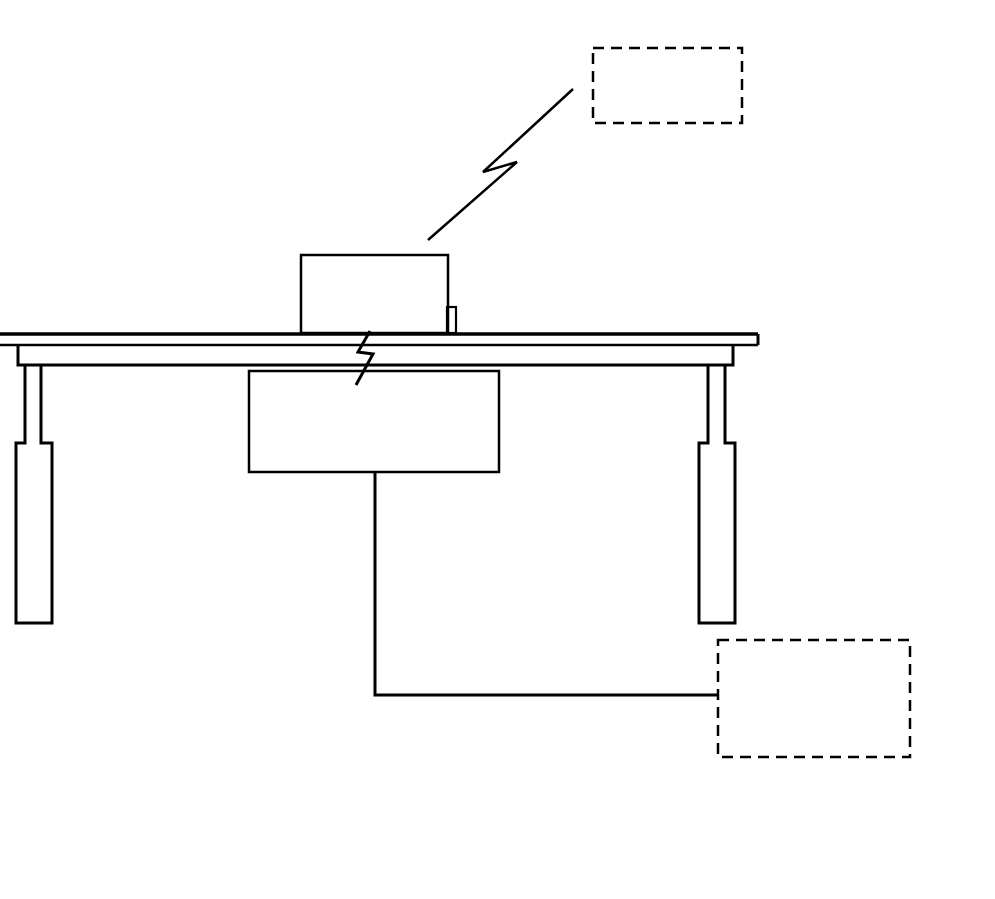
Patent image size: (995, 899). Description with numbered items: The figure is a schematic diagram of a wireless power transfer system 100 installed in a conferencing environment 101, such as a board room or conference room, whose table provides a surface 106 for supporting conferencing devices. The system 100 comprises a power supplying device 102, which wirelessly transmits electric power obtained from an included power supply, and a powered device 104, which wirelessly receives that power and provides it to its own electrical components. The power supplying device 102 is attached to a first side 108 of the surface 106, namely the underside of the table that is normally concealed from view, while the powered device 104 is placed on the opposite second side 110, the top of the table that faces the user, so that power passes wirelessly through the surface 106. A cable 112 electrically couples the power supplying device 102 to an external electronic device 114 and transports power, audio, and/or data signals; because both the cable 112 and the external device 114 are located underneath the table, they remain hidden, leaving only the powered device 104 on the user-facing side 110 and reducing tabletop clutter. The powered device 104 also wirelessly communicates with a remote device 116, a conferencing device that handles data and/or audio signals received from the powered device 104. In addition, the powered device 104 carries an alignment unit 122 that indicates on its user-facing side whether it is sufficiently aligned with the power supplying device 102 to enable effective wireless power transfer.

The wireless power transfer system 100 is at (384, 206).
The environment 101 is at (178, 63).
The power supplying device 102 is at (499, 422).
The powered device 104 is at (318, 255).
The surface 106 is at (620, 333).
The first side 108 is at (169, 377).
The second side 110 is at (131, 324).
The cable 112 is at (455, 695).
The external electronic device 114 is at (792, 640).
The remote device 116 is at (690, 48).
The alignment unit 122 is at (460, 327).